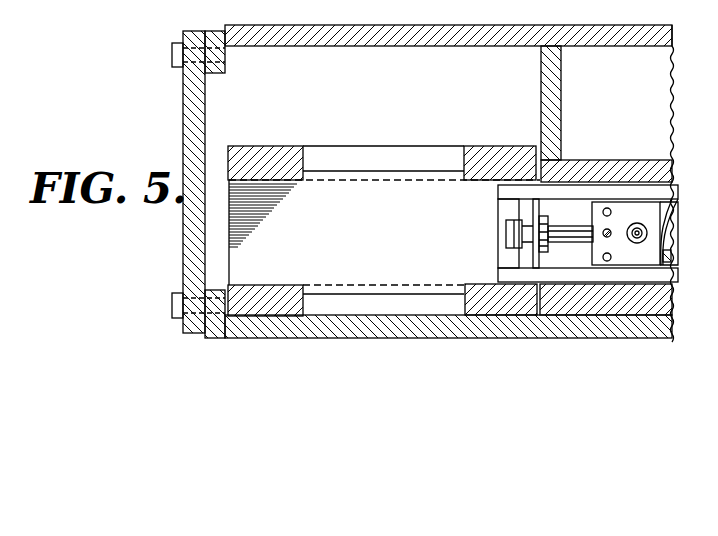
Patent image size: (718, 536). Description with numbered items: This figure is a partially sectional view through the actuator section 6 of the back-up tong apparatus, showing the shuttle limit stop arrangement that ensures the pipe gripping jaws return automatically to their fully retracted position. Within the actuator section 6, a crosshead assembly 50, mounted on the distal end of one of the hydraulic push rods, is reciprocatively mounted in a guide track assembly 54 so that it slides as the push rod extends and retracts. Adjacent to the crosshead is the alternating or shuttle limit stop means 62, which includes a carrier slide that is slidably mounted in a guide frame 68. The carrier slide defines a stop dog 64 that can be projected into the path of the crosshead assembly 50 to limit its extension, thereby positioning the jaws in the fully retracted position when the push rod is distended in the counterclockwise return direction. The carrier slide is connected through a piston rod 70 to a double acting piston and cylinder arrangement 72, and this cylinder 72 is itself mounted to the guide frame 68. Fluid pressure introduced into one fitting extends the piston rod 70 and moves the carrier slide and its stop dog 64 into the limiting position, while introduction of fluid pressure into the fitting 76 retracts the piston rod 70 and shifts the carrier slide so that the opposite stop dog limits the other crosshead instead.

The actuator section 6 is at (183, 97).
The crosshead assembly 50 is at (245, 251).
The guide track assembly 54 is at (278, 156).
The shuttle limit stop means 62 is at (672, 205).
The stop dog 64 is at (507, 191).
The guide frame 68 is at (603, 175).
The piston rod 70 is at (580, 238).
The double acting piston and cylinder arrangement 72 is at (672, 263).
The fitting 76 is at (637, 223).